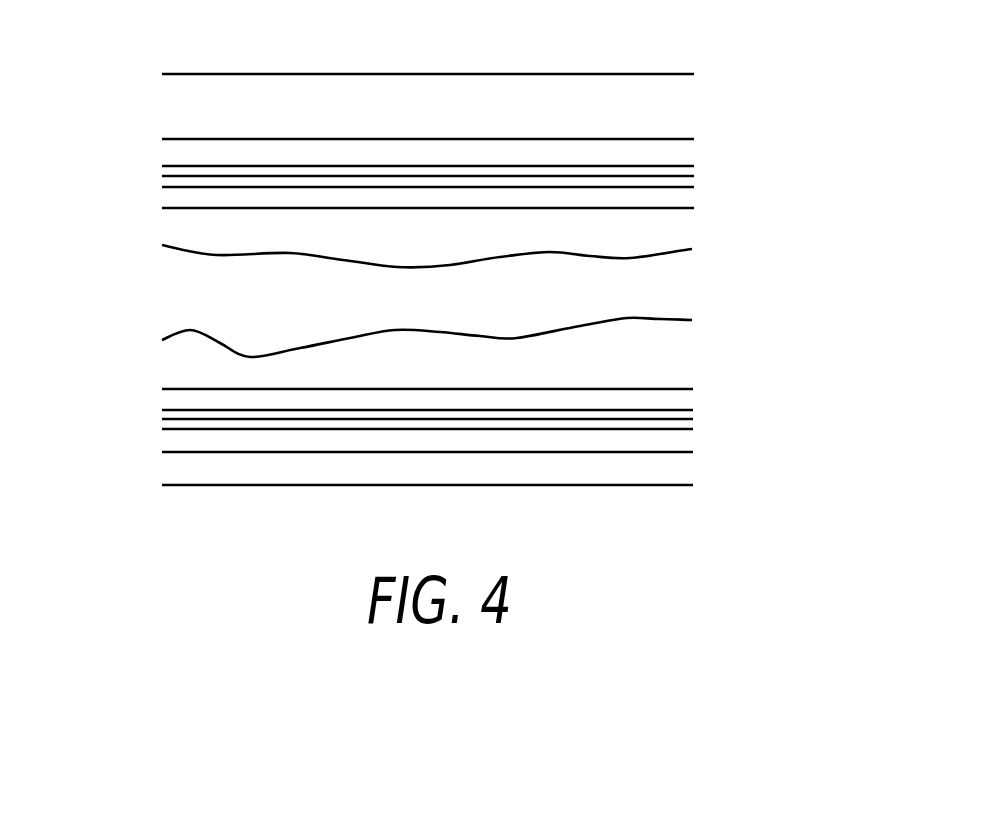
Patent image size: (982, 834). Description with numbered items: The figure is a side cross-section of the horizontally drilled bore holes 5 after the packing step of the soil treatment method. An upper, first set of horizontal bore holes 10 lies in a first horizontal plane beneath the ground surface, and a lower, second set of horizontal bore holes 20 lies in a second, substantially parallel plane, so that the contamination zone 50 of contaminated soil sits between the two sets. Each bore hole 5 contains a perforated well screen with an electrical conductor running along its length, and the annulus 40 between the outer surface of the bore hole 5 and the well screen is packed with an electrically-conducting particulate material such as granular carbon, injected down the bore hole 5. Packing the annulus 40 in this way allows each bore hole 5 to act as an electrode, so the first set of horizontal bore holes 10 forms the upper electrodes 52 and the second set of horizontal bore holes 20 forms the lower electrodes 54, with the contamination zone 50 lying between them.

The bore hole 5 is at (488, 140).
The first set of horizontal bore holes 10 is at (722, 153).
The second set of horizontal bore holes 20 is at (720, 438).
The annulus 40 is at (272, 153).
The contamination zone 50 is at (628, 290).
The upper electrodes 52 is at (615, 140).
The lower electrodes 54 is at (490, 452).